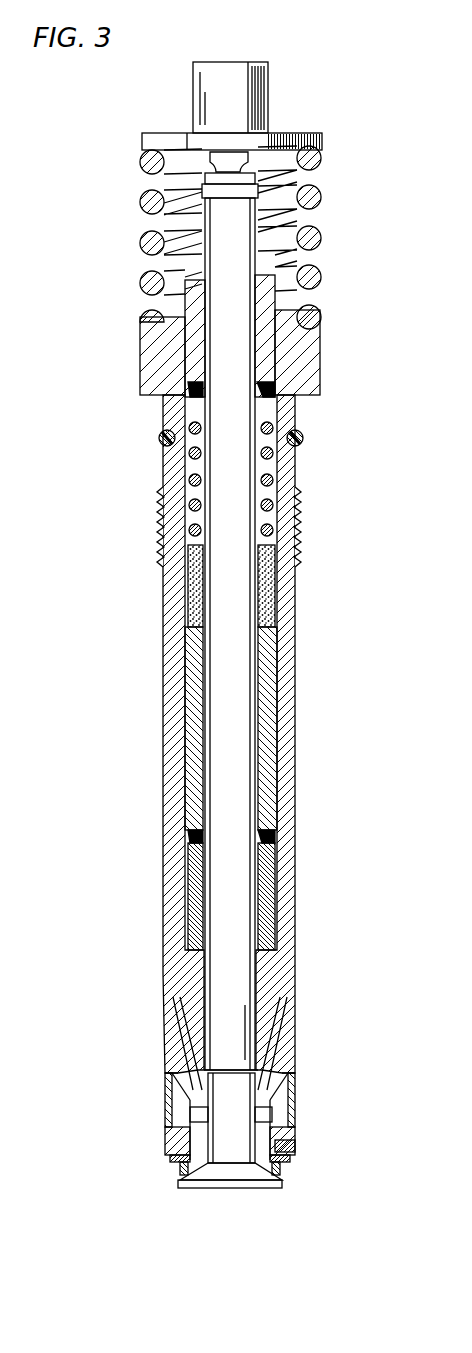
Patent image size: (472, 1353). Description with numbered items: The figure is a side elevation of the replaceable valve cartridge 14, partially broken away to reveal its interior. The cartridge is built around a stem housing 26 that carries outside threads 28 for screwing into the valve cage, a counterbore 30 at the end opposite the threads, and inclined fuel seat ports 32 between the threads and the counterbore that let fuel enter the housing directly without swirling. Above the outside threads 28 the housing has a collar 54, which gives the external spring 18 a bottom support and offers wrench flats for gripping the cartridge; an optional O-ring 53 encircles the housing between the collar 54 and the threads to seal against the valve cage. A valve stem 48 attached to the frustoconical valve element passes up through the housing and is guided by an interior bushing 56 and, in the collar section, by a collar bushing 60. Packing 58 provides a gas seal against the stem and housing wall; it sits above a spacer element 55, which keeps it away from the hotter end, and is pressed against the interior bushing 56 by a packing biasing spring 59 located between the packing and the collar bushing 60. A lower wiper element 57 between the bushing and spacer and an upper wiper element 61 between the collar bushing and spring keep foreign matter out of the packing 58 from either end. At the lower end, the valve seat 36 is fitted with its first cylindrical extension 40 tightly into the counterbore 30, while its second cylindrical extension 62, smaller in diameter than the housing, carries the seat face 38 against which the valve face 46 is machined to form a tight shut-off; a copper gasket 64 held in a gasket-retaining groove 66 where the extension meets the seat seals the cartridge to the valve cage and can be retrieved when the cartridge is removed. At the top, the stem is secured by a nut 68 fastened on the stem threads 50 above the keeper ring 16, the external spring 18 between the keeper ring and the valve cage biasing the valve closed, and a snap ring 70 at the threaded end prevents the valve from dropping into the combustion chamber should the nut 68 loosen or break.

The valve cartridge 14 is at (303, 661).
The keeper ring 16 is at (320, 142).
The external spring 18 is at (312, 200).
The stem housing 26 is at (290, 718).
The outside threads 28 is at (302, 513).
The counterbore 30 is at (296, 1115).
The fuel seat ports 32 is at (283, 1035).
The valve seat 36 is at (165, 1143).
The seat face 38 is at (281, 1170).
The first cylindrical extension 40 is at (167, 1118).
The valve face 46 is at (262, 1190).
The valve stem 48 is at (238, 978).
The stem threads 50 is at (252, 178).
The O-ring 53 is at (303, 440).
The collar 54 is at (320, 363).
The spacer element 55 is at (270, 760).
The interior bushing 56 is at (270, 915).
The lower wiper element 57 is at (272, 840).
The packing 58 is at (278, 587).
The packing biasing spring 59 is at (280, 483).
The collar bushing 60 is at (276, 300).
The upper wiper element 61 is at (276, 405).
The second cylindrical extension 62 is at (175, 1172).
The gasket 64 is at (165, 1160).
The gasket-retaining groove 66 is at (296, 1146).
The nut 68 is at (268, 98).
The snap ring 70 is at (258, 217).